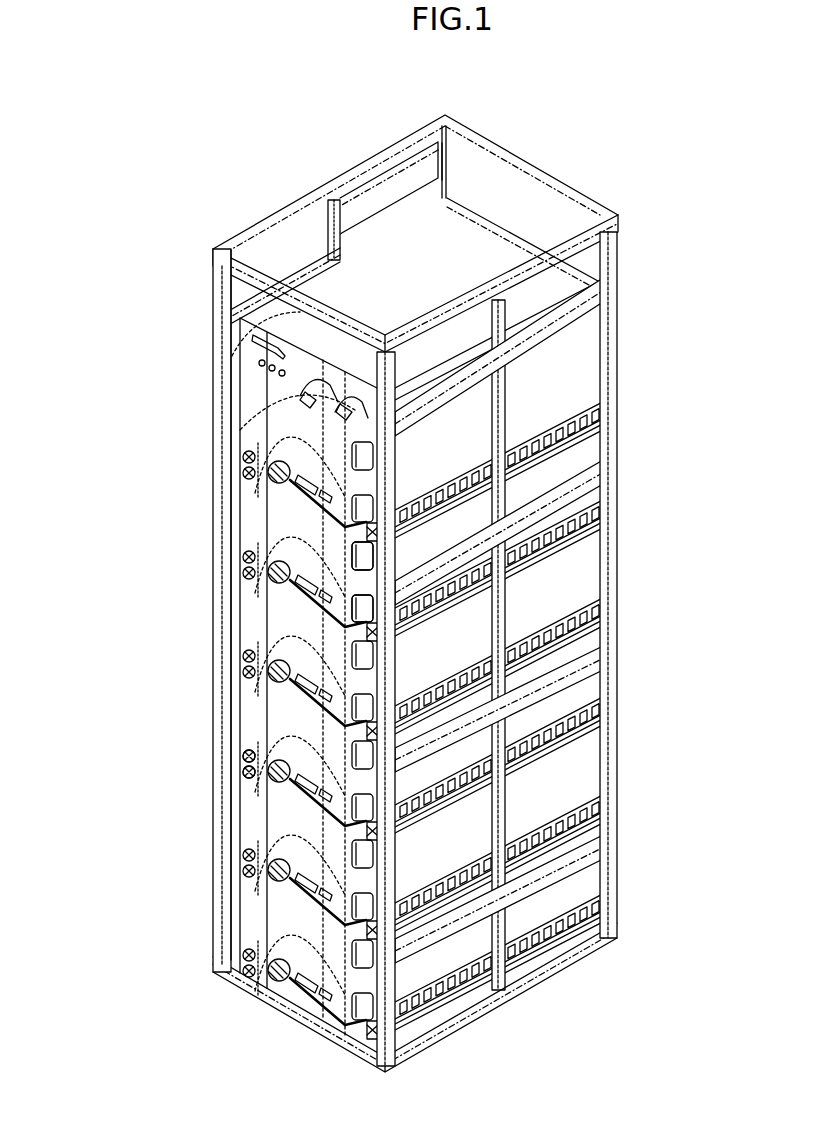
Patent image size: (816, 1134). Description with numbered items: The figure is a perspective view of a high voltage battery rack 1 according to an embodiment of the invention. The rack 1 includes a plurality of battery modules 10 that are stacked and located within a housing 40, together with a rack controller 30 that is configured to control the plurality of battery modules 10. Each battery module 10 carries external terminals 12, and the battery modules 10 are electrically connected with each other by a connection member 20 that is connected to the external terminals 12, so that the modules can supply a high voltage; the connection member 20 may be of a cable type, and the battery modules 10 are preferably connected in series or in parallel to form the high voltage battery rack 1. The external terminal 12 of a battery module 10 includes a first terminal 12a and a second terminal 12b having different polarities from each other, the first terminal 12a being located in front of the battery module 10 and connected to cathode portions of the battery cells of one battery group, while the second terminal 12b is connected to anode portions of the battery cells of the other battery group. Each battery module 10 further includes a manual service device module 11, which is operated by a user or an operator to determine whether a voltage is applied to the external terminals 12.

The high voltage battery rack 1 is at (40, 84).
The battery module 10 is at (226, 675).
The manual service device (MSD) module 11 is at (249, 778).
The external terminal 12 is at (224, 604).
The first terminal 12a is at (350, 553).
The second terminal 12b is at (350, 606).
The connection member 20 is at (368, 440).
The rack controller 30 is at (246, 318).
The housing 40 is at (346, 593).